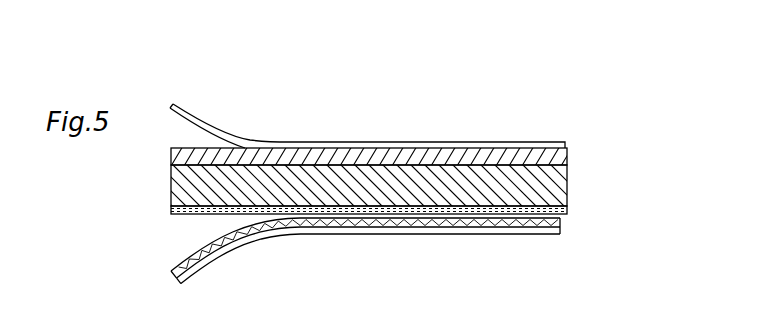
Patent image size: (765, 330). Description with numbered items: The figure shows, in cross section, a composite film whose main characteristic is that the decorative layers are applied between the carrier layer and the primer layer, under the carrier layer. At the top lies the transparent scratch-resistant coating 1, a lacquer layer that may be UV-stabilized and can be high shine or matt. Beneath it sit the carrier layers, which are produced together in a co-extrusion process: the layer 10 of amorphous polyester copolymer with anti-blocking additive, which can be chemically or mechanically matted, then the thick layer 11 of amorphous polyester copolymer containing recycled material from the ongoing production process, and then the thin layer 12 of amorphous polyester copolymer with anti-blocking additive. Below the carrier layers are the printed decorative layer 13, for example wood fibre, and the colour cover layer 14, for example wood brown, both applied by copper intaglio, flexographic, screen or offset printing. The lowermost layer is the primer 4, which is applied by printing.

The transparent scratch-resistant coating 1 is at (515, 142).
The primer 4 is at (530, 230).
The carrier layer of amorphous polyester copolymer with anti-blocking additive 10 is at (560, 154).
The carrier layer of amorphous polyester copolymer with recycled material 11 is at (553, 200).
The carrier layer of amorphous polyester copolymer with anti-blocking additive 12 is at (567, 212).
The decorative layer 13 is at (562, 219).
The colour cover layer 14 is at (557, 233).